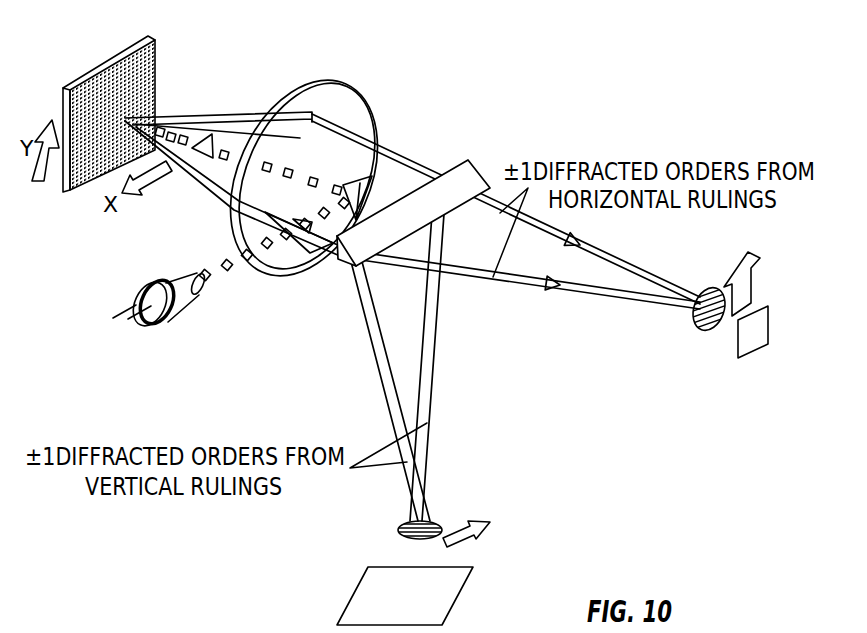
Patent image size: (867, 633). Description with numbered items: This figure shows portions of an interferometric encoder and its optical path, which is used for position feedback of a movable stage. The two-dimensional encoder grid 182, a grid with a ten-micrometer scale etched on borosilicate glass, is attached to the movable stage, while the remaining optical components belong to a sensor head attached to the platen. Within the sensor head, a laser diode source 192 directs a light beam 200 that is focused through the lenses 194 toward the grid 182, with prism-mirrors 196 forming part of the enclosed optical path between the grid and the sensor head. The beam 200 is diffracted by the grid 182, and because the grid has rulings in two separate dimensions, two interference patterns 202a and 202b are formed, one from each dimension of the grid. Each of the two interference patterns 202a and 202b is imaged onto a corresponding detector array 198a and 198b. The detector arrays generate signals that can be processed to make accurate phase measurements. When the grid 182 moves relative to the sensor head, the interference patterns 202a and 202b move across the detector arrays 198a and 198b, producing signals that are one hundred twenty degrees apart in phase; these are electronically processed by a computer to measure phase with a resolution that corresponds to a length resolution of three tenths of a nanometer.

The two-dimensional encoder grid 182 is at (97, 68).
The laser diode source 192 is at (157, 287).
The lenses 194 is at (325, 88).
The prism-mirrors 196 is at (360, 180).
The detector array 198a is at (405, 596).
The detector array 198b is at (748, 352).
The light beam 200 is at (230, 270).
The interference pattern 202a is at (432, 521).
The interference pattern 202b is at (712, 288).